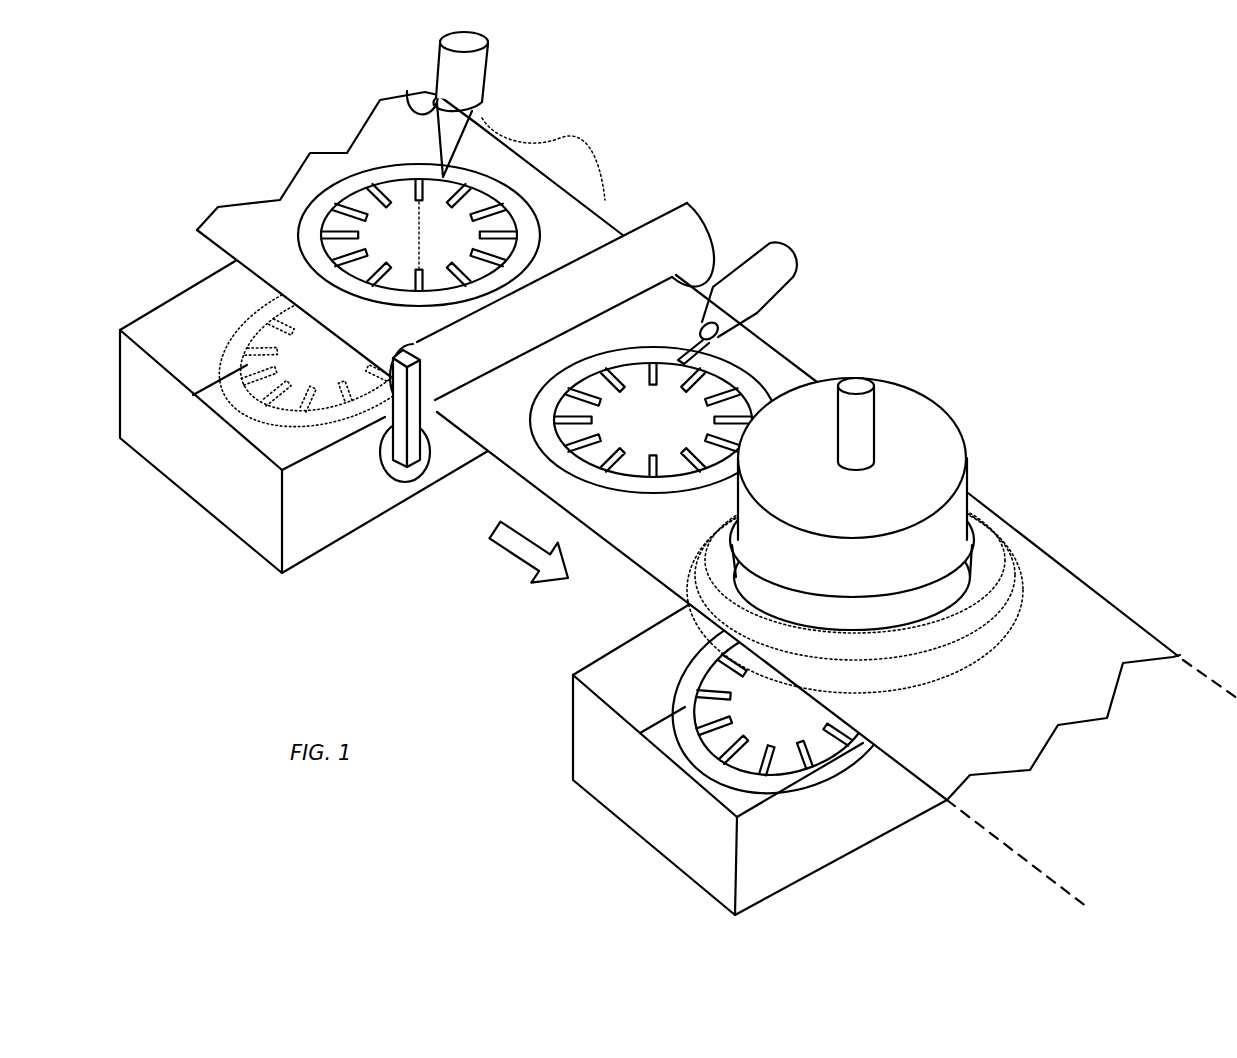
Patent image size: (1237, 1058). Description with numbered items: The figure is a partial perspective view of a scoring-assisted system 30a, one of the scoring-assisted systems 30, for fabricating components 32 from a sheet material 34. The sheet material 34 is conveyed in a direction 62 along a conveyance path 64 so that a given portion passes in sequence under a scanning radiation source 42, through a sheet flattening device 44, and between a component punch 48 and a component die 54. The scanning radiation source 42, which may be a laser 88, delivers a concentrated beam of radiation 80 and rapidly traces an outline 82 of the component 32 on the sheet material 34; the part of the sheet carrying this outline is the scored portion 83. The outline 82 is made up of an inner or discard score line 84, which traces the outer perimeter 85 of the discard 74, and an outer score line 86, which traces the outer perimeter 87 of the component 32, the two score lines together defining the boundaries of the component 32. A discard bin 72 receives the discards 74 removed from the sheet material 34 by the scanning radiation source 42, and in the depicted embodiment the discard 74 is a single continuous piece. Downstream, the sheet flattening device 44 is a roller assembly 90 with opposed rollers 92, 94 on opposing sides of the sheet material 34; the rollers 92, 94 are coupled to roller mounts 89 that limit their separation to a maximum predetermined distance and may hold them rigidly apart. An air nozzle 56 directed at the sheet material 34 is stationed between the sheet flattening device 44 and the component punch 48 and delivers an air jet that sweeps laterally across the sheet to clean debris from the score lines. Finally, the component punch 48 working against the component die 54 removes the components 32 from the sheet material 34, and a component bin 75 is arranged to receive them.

The scoring-assisted system 30 is at (678, 473).
The scoring-assisted system 30a is at (248, 92).
The component 32 is at (733, 780).
The sheet material 34 is at (217, 220).
The scanning radiation source 42 is at (506, 104).
The sheet flattening device 44 is at (605, 276).
The component punch 48 is at (948, 397).
The component die 54 is at (1020, 590).
The air nozzle 56 is at (795, 258).
The direction 62 is at (520, 547).
The conveyance path 64 is at (1124, 764).
The discard bin 72 is at (265, 548).
The discard 74 is at (308, 358).
The component bin 75 is at (593, 780).
The concentrated beam of radiation 80 is at (410, 107).
The outline 82 is at (355, 168).
The scored portion 83 is at (545, 137).
The inner score line 84 is at (653, 332).
The outer perimeter of the discard 85 is at (653, 332).
The outer score line 86 is at (317, 161).
The outer perimeter of the component 87 is at (313, 193).
The laser 88 is at (492, 62).
The roller mounts 89 is at (385, 452).
The roller assembly 90 is at (605, 276).
The roller 92 is at (700, 228).
The roller 94 is at (410, 482).